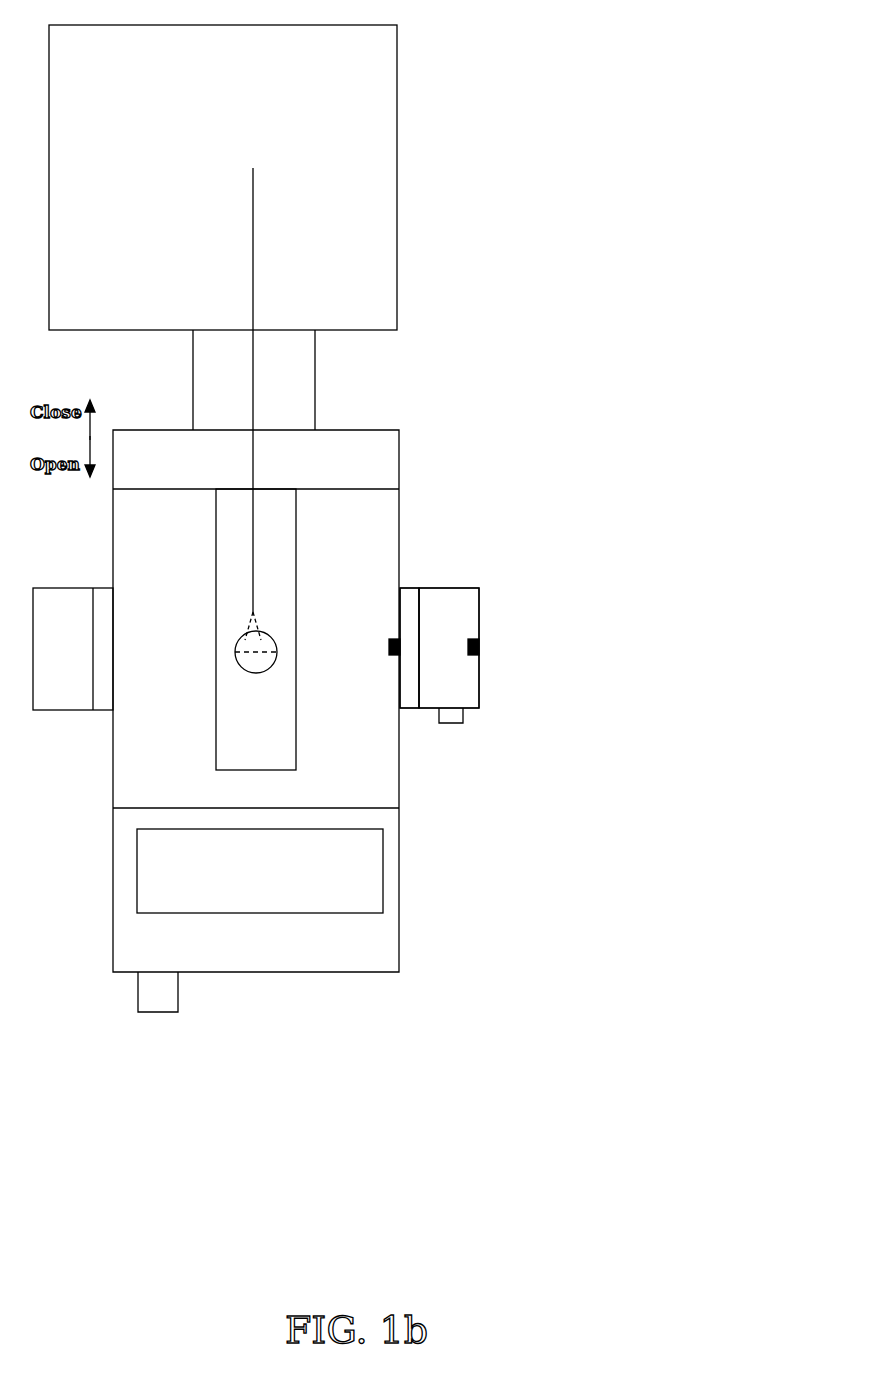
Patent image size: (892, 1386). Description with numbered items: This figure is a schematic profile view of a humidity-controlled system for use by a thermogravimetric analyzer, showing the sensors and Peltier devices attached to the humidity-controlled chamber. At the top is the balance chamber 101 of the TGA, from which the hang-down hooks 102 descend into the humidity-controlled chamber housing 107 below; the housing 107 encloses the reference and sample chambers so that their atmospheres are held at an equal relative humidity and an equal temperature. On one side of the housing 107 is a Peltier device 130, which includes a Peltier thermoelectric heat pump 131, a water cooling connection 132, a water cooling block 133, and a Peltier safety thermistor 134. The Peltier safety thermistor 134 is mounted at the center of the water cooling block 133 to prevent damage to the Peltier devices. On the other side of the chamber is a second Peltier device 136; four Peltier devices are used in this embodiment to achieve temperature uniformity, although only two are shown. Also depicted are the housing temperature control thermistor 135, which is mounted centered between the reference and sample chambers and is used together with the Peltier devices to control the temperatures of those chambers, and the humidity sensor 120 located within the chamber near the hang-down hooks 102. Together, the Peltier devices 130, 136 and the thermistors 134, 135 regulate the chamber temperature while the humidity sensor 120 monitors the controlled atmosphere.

The balance chamber 101 is at (409, 78).
The hang-down hooks 102 is at (266, 301).
The humidity-controlled chamber housing 107 is at (366, 416).
The humidity sensor 120 is at (291, 639).
The Peltier device 130 is at (535, 581).
The Peltier thermoelectric heat pump 131 is at (419, 721).
The water cooling connection 132 is at (471, 734).
The water cooling block 133 is at (492, 678).
The Peltier safety thermistor 134 is at (493, 652).
The housing temperature control thermistor 135 is at (417, 644).
The second Peltier device 136 is at (47, 558).